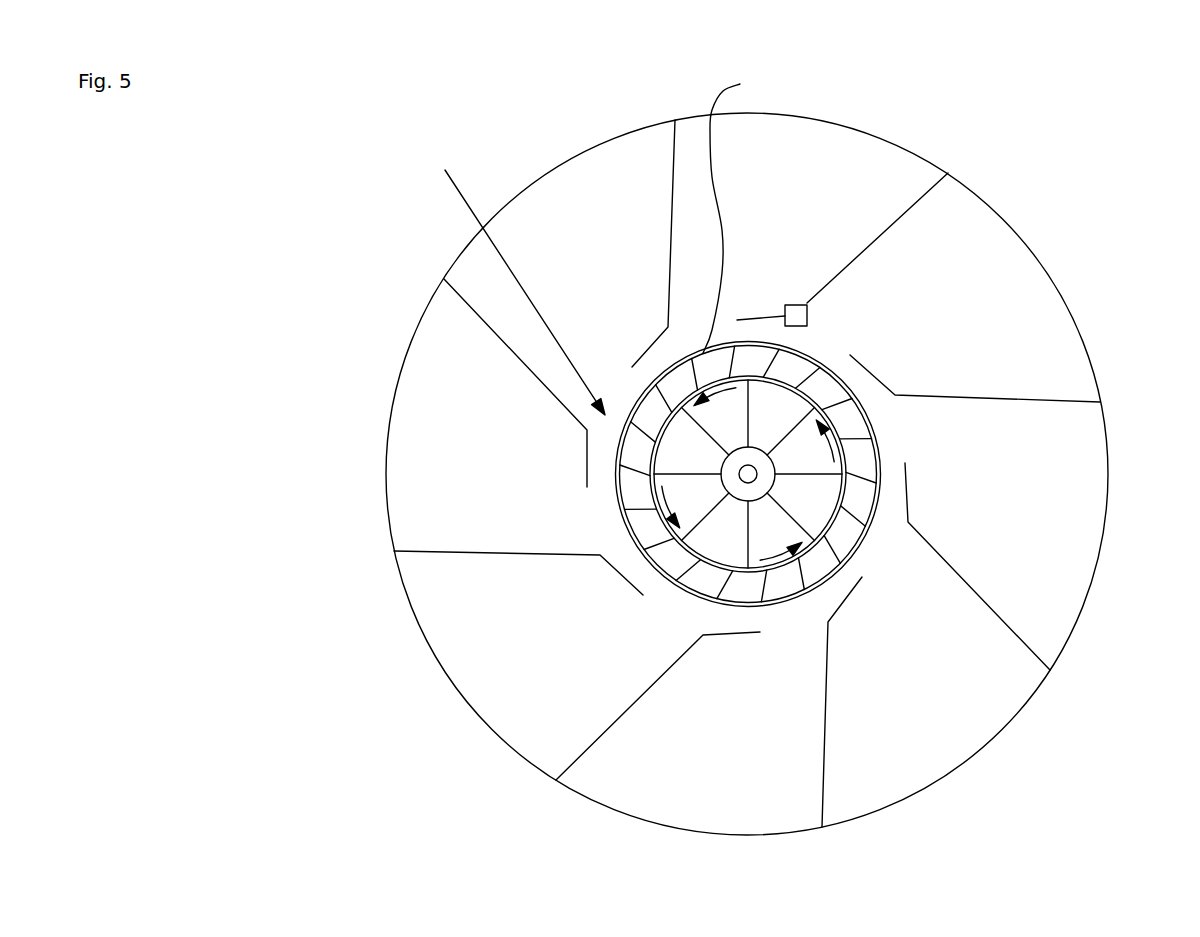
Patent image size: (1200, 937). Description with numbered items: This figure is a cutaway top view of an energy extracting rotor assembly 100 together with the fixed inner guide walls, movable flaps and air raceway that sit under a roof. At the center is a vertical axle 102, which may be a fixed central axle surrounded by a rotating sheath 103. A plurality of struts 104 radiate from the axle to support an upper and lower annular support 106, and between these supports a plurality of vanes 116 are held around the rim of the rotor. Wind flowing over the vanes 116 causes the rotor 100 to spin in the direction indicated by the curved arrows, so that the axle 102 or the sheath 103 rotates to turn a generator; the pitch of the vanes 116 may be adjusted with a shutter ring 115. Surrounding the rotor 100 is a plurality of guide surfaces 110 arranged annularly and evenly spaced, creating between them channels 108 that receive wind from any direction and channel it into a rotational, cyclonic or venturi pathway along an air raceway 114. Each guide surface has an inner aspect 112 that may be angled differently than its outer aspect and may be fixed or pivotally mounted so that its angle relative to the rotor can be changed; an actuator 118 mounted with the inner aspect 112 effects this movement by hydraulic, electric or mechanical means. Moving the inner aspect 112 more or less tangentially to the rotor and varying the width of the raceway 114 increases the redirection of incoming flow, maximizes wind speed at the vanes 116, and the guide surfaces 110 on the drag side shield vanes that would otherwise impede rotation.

The energy extracting rotor assembly 100 is at (676, 606).
The vertical axle 102 is at (740, 490).
The rotating sheath 103 is at (775, 463).
The struts 104 is at (750, 403).
The annular support 106 is at (705, 219).
The channels 108 is at (927, 686).
The guide surfaces 110 is at (517, 553).
The inner aspect 112 is at (587, 458).
The air raceway 114 is at (507, 280).
The shutter ring 115 is at (880, 456).
The vanes 116 is at (862, 577).
The actuator 118 is at (807, 318).